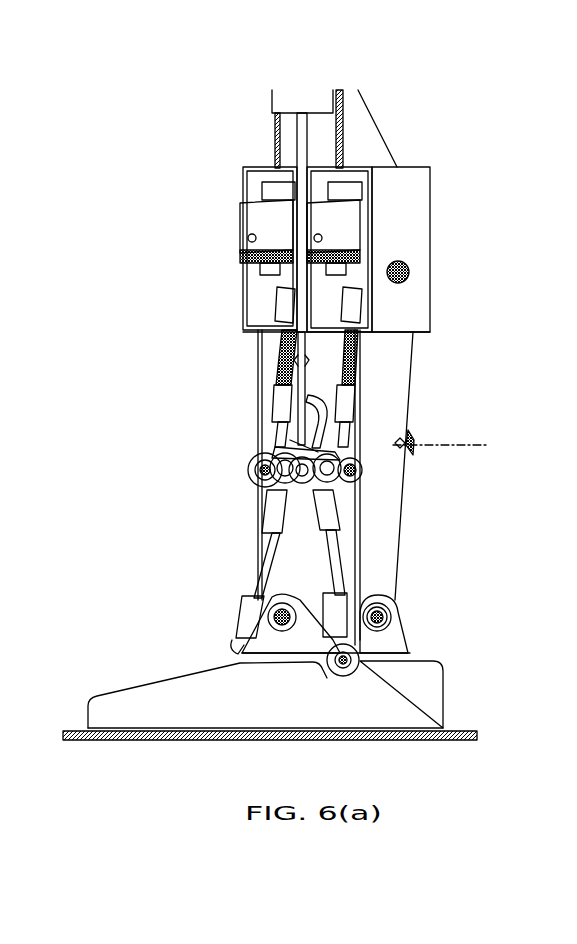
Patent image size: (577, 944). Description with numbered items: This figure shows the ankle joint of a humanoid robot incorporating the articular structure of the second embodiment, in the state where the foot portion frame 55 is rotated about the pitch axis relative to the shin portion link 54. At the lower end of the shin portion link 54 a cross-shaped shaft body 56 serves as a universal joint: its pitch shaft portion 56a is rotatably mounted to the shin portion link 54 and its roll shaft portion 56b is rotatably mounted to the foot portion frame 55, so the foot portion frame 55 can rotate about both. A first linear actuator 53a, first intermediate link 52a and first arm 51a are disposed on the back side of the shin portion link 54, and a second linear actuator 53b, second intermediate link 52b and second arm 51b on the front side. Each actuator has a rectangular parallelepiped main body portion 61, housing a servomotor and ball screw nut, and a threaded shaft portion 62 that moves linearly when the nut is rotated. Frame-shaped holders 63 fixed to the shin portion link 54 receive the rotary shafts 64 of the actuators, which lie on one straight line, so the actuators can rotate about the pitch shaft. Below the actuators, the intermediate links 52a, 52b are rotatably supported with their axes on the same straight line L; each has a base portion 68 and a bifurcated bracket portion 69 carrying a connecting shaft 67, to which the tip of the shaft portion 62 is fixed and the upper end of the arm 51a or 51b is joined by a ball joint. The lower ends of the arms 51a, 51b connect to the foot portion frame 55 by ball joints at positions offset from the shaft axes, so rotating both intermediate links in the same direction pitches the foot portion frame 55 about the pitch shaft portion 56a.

The first arm 51a is at (262, 573).
The second arm 51b is at (345, 572).
The first intermediate link 52a is at (250, 468).
The second intermediate link 52b is at (365, 457).
The first linear actuator 53a is at (248, 218).
The second linear actuator 53b is at (365, 228).
The shin portion link 54 is at (370, 131).
The foot portion frame 55 is at (428, 693).
The shaft body 56 is at (515, 600).
The pitch shaft portion 56a is at (395, 597).
The roll shaft portion 56b is at (400, 603).
The main body portion 61 is at (372, 240).
The shaft portion 62 is at (360, 367).
The frame-shaped holder 63 is at (377, 250).
The rotary shaft 64 is at (413, 274).
The connecting shaft 67 is at (350, 510).
The base portion 68 is at (268, 432).
The bracket portion 69 is at (345, 480).
The straight line L is at (443, 445).